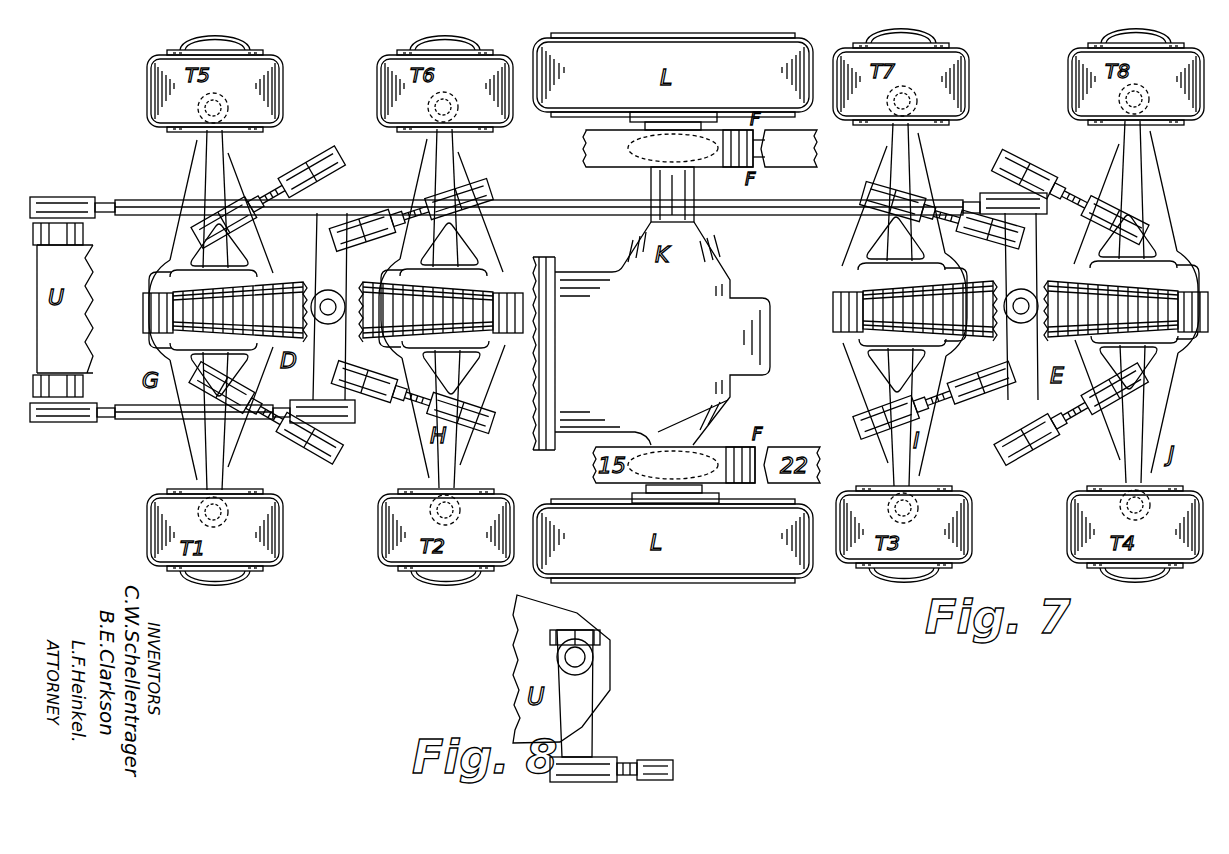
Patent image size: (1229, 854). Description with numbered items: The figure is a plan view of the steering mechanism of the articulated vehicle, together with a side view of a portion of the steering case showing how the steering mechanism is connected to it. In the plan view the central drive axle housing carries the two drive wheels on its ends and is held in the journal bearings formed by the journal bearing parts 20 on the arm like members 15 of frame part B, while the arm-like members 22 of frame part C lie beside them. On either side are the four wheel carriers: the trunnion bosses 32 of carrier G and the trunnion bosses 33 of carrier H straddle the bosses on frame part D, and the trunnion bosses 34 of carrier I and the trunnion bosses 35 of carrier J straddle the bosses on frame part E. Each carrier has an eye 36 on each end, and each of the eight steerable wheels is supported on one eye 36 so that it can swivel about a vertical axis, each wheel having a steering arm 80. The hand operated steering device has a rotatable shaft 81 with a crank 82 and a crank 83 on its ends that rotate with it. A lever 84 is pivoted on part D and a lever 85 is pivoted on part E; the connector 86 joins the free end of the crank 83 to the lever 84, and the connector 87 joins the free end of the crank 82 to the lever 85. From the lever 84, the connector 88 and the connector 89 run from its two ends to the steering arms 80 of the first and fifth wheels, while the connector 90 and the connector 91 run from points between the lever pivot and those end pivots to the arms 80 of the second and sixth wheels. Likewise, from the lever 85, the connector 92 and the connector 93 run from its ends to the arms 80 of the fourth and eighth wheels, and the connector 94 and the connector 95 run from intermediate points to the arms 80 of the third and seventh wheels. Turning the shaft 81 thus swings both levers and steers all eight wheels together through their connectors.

In FIG. 7, the arm like members 15 is at (668, 148).
In FIG. 7, the journal bearing part 20 is at (708, 475).
In FIG. 7, the arm-like members 22 is at (770, 148).
In FIG. 7, the trunnion bosses 32 is at (150, 300).
In FIG. 7, the trunnion bosses 33 is at (510, 292).
In FIG. 7, the trunnion bosses 34 is at (845, 320).
In FIG. 7, the trunnion bosses 35 is at (1185, 328).
In FIG. 7, the eye 36 is at (918, 522).
In FIG. 7, the steering arm 80 is at (222, 138).
In FIG. 8, the rotatable shaft 81 is at (580, 657).
In FIG. 7, the crank 82 is at (80, 233).
In FIG. 7, the crank 83 is at (83, 382).
In FIG. 8, the crank 83 is at (575, 693).
In FIG. 7, the lever 84 is at (329, 306).
In FIG. 7, the lever 85 is at (1021, 306).
In FIG. 7, the connector 86 is at (168, 423).
In FIG. 8, the connector 86 is at (652, 760).
In FIG. 7, the connector 87 is at (178, 200).
In FIG. 7, the connector 88 is at (290, 433).
In FIG. 7, the connector 89 is at (286, 197).
In FIG. 7, the connector 90 is at (403, 400).
In FIG. 7, the connector 91 is at (390, 245).
In FIG. 7, the connector 92 is at (1092, 412).
In FIG. 7, the connector 93 is at (1085, 200).
In FIG. 7, the connector 94 is at (958, 400).
In FIG. 7, the connector 95 is at (950, 228).